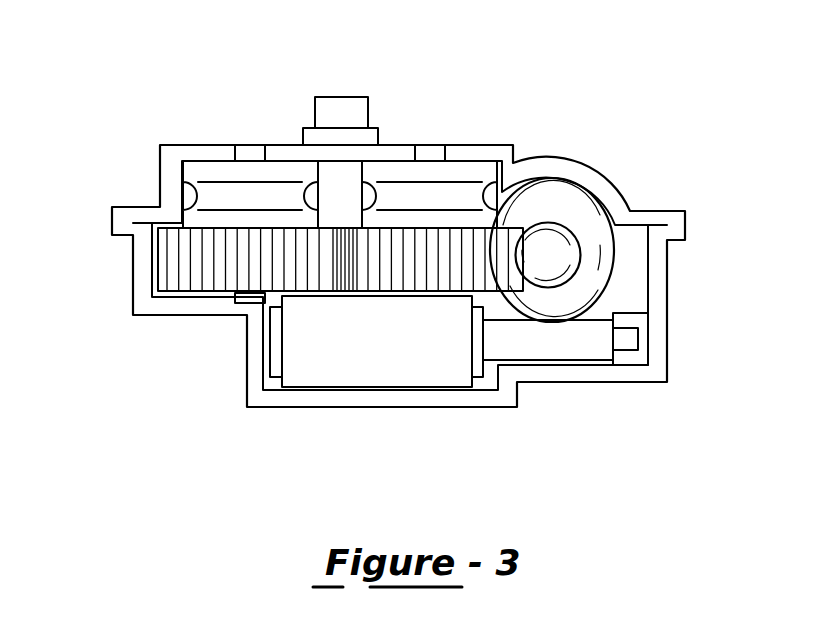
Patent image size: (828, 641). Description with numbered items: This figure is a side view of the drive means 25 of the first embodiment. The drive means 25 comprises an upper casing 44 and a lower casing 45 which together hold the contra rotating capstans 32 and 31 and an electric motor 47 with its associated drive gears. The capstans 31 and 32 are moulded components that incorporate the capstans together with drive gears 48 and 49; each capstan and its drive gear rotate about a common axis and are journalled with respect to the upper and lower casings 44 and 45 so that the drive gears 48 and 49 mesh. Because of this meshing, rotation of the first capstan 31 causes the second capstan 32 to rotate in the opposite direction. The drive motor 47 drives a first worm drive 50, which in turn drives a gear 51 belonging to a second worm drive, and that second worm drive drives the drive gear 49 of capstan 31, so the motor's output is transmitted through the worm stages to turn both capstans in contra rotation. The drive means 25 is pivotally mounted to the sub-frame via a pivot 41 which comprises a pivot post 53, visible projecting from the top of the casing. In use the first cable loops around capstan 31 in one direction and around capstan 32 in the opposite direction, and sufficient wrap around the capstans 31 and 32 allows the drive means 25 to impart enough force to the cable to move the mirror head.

The drive means 25 is at (173, 368).
The first capstan 31 is at (442, 198).
The second capstan 32 is at (250, 198).
The pivot 41 is at (312, 92).
The upper casing 44 is at (158, 178).
The lower casing 45 is at (147, 315).
The electric motor 47 is at (382, 378).
The drive gear 48 is at (177, 264).
The drive gear 49 is at (490, 297).
The first worm drive 50 is at (550, 350).
The gear 51 is at (597, 265).
The pivot post 53 is at (348, 117).